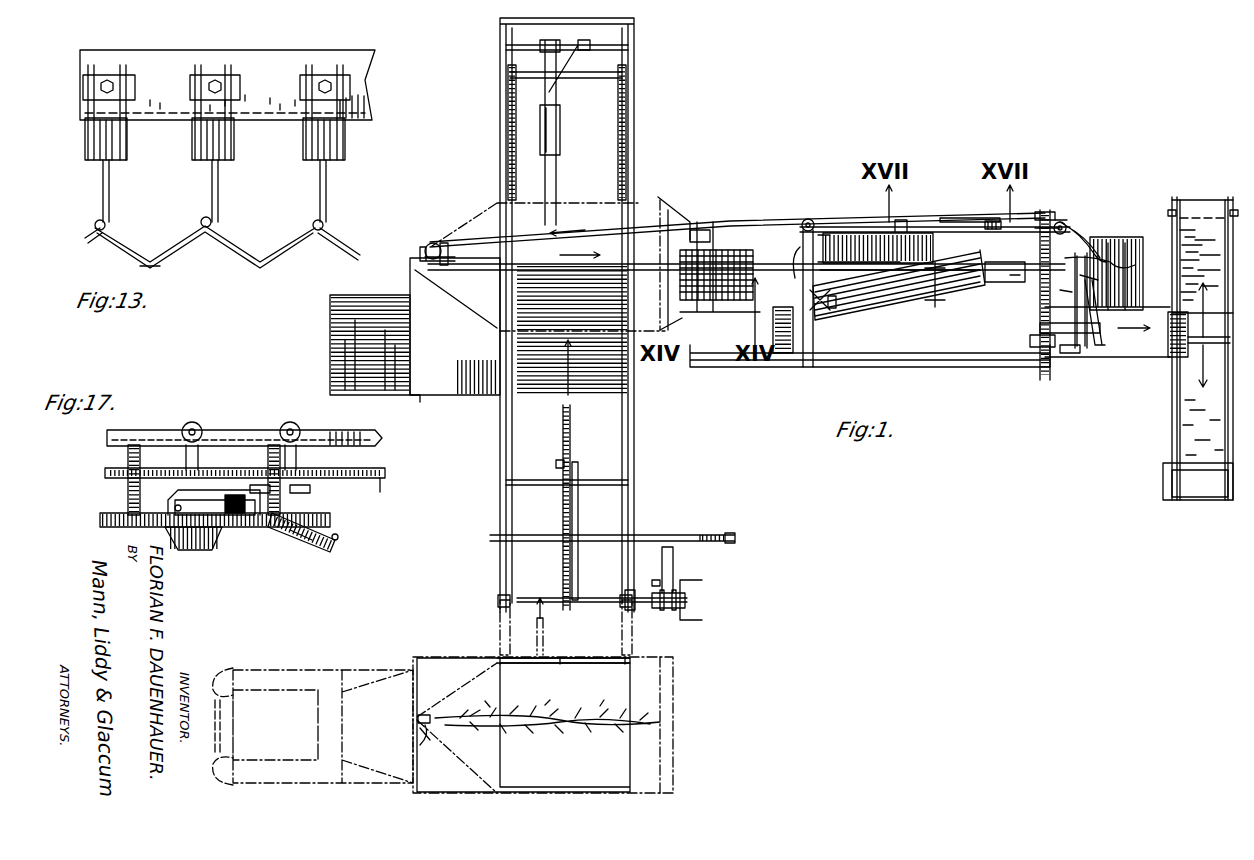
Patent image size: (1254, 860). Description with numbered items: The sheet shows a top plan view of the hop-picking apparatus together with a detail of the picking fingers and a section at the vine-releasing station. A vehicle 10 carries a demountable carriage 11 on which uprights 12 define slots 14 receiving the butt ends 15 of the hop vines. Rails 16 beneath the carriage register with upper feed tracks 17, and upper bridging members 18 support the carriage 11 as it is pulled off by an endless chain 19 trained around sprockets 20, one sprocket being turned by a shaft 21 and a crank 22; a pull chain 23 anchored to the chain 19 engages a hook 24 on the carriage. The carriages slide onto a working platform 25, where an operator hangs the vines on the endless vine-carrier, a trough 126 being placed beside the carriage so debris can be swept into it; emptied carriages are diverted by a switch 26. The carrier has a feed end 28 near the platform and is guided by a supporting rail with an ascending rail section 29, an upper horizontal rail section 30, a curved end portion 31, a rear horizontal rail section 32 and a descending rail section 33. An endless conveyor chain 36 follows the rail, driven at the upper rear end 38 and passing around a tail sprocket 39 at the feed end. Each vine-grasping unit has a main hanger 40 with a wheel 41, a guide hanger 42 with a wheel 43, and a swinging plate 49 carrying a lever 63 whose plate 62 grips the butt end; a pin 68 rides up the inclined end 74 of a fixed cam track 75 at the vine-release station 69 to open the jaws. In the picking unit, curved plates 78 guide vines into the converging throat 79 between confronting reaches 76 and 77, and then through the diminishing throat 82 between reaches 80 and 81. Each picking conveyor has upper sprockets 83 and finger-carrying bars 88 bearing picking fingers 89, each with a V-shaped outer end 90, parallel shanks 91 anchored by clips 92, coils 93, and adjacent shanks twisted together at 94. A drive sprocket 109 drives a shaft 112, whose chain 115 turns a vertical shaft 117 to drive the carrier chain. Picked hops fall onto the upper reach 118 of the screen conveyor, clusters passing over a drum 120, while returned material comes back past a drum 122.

In FIG. 1, the vehicle 10 is at (333, 661).
In FIG. 1, the carriage 11 is at (481, 328).
In FIG. 1, the uprights 12 is at (416, 717).
In FIG. 1, the slots 14 is at (420, 740).
In FIG. 1, the butt ends 15 is at (440, 718).
In FIG. 1, the rails 16 is at (505, 790).
In FIG. 1, the upper feed tracks 17 is at (502, 463).
In FIG. 1, the upper bridging members 18 is at (510, 635).
In FIG. 1, the endless chain 19 is at (560, 518).
In FIG. 1, the sprockets 20 is at (562, 462).
In FIG. 1, the shaft 21 is at (610, 598).
In FIG. 1, the crank 22 is at (692, 580).
In FIG. 1, the pull chain 23 is at (570, 628).
In FIG. 1, the hook 24 is at (575, 665).
In FIG. 1, the working platform 25 is at (490, 380).
In FIG. 1, the switch 26 is at (493, 116).
In FIG. 1, the feed end 28 is at (423, 237).
In FIG. 1, the ascending rail section 29 is at (612, 272).
In FIG. 1, the upper horizontal rail section 30 is at (869, 278).
In FIG. 1, the curved end portion 31 is at (1086, 232).
In FIG. 17, the rear horizontal rail section 32 is at (243, 429).
In FIG. 1, the rear horizontal rail section 32 is at (915, 221).
In FIG. 1, the descending rail section 33 is at (610, 232).
In FIG. 17, the endless conveyor chain 36 is at (383, 478).
In FIG. 1, the upper rear end 38 is at (1113, 256).
In FIG. 1, the tail or reversing sprocket 39 is at (422, 253).
In FIG. 17, the main hanger 40 is at (200, 455).
In FIG. 17, the wheel 41 is at (182, 425).
In FIG. 17, the guide hanger 42 is at (312, 480).
In FIG. 17, the wheel 43 is at (297, 422).
In FIG. 17, the plate 49 is at (128, 496).
In FIG. 17, the plate 62 is at (250, 504).
In FIG. 17, the lever 63 is at (205, 548).
In FIG. 17, the pin 68 is at (255, 520).
In FIG. 17, the vine-release station 69 is at (295, 550).
In FIG. 1, the vine-release station 69 is at (1003, 213).
In FIG. 17, the inclined end 74 is at (340, 546).
In FIG. 17, the fixed cam track 75 is at (326, 557).
In FIG. 1, the fixed cam track 75 is at (962, 222).
In FIG. 1, the confronting reach 76 is at (800, 251).
In FIG. 1, the confronting reach 77 is at (880, 305).
In FIG. 1, the curved plates 78 is at (800, 290).
In FIG. 1, the converging throat 79 is at (858, 340).
In FIG. 1, the confronting reach 80 is at (1055, 215).
In FIG. 1, the confronting reach 81 is at (1006, 295).
In FIG. 1, the gradually-diminishing throat 82 is at (968, 300).
In FIG. 1, the upper sprockets 83 is at (925, 300).
In FIG. 13, the finger-carrying bars 88 is at (370, 83).
In FIG. 13, the picking fingers 89 is at (127, 263).
In FIG. 13, the V-shaped outer end 90 is at (172, 255).
In FIG. 13, the parallel shanks 91 is at (212, 178).
In FIG. 13, the clips 92 is at (135, 88).
In FIG. 13, the coils 93 is at (190, 140).
In FIG. 13, the twisted shanks 94 is at (110, 222).
In FIG. 1, the drive sprocket 109 is at (1066, 300).
In FIG. 1, the shaft 112 is at (1068, 348).
In FIG. 1, the chain 115 is at (1105, 345).
In FIG. 1, the vertical shaft 117 is at (1135, 265).
In FIG. 1, the upper reach 118 is at (730, 312).
In FIG. 1, the drum 120 is at (1128, 287).
In FIG. 1, the drum 122 is at (698, 230).
In FIG. 1, the trough 126 is at (668, 215).